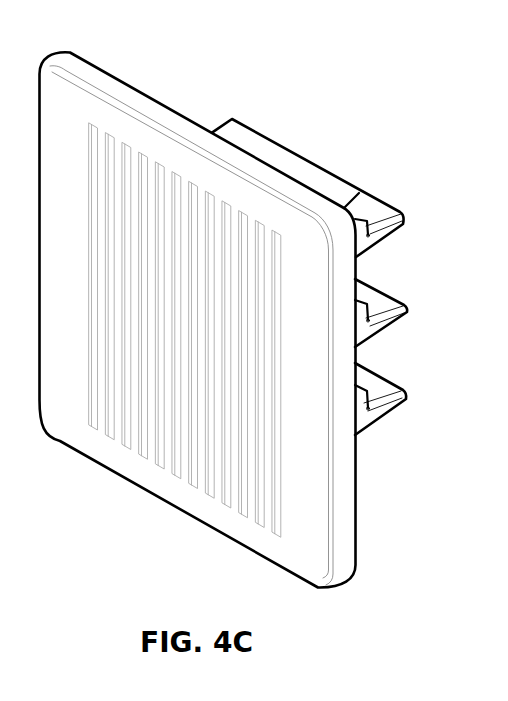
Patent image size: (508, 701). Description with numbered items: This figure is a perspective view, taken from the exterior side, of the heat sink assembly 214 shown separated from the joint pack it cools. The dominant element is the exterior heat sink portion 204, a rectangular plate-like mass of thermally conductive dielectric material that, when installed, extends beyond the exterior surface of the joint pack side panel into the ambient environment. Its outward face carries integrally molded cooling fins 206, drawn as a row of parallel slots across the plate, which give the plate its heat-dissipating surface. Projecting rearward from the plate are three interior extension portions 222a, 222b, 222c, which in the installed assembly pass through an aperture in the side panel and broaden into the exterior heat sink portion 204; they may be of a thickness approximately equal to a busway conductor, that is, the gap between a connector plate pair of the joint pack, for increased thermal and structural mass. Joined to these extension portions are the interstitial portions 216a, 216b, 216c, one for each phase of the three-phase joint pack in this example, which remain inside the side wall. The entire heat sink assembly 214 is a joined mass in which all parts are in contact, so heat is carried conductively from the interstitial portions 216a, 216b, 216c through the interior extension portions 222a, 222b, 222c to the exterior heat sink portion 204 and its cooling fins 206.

The exterior heat sink portion 204 is at (136, 97).
The cooling fins 206 is at (82, 425).
The heat sink assembly 214 is at (378, 91).
The interstitial portion 216a is at (354, 205).
The interstitial portion 216b is at (425, 328).
The interstitial portion 216c is at (425, 414).
The interior extension portion 222a is at (358, 238).
The interior extension portion 222b is at (357, 328).
The interior extension portion 222c is at (357, 415).